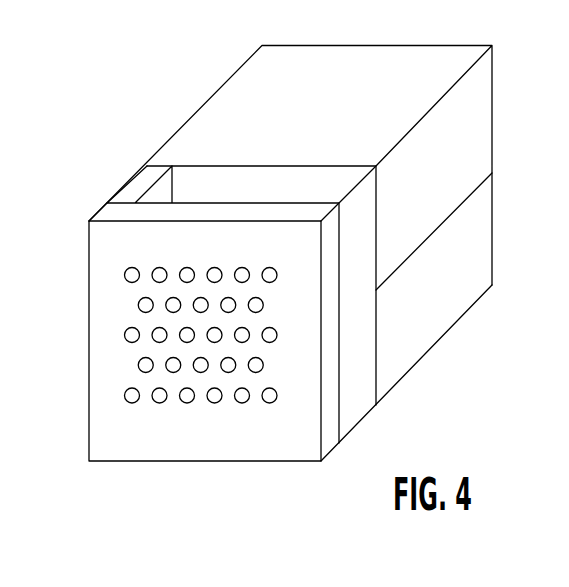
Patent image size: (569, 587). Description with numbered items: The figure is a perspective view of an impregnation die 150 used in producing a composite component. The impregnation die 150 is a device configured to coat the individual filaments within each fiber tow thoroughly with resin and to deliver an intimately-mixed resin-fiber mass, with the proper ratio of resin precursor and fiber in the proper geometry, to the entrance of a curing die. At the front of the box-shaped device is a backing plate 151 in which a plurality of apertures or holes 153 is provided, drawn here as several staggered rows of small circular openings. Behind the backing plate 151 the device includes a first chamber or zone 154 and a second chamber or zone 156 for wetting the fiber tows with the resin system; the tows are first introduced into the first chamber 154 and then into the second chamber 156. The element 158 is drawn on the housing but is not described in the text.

The impregnation die 150 is at (311, 278).
The backing plate 151 is at (329, 435).
The holes 153 is at (123, 397).
The first chamber 154 is at (351, 412).
The second chamber 156 is at (443, 320).
The housing 158 is at (485, 132).